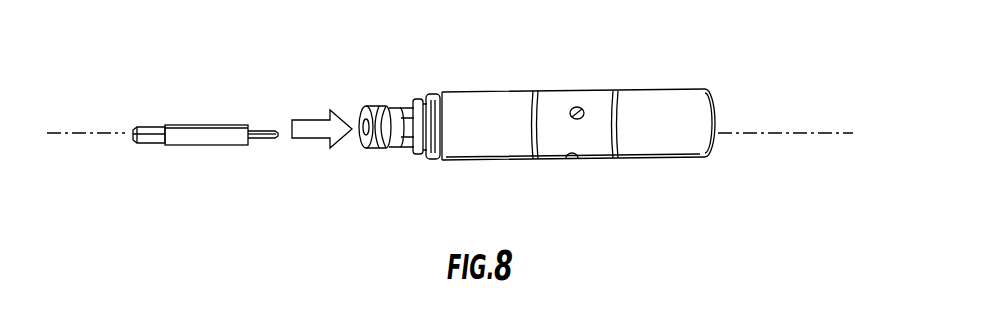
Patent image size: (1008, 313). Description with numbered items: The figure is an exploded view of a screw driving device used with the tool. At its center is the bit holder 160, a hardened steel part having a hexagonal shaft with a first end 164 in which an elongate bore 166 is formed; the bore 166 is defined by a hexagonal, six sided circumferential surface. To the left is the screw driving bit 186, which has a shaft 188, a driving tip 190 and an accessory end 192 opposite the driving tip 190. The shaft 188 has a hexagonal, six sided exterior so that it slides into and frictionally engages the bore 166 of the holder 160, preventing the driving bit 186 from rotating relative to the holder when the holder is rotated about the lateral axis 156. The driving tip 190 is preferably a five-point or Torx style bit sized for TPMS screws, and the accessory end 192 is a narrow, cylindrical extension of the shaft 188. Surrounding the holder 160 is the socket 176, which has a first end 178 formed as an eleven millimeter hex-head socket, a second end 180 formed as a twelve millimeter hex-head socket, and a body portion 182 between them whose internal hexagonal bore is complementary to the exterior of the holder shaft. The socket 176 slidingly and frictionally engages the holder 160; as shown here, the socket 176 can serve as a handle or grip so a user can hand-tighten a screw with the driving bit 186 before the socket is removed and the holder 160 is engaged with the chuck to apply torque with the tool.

The lateral axis 156 is at (787, 133).
The bit holder 160 is at (534, 122).
The first end 164 is at (377, 150).
The elongate bore 166 is at (358, 112).
The socket 176 is at (588, 89).
The first end 178 is at (660, 160).
The second end 180 is at (461, 163).
The body portion 182 is at (555, 90).
The screw driving bit 186 is at (212, 125).
The shaft 188 is at (212, 146).
The driving tip 190 is at (147, 126).
The accessory end 192 is at (272, 140).